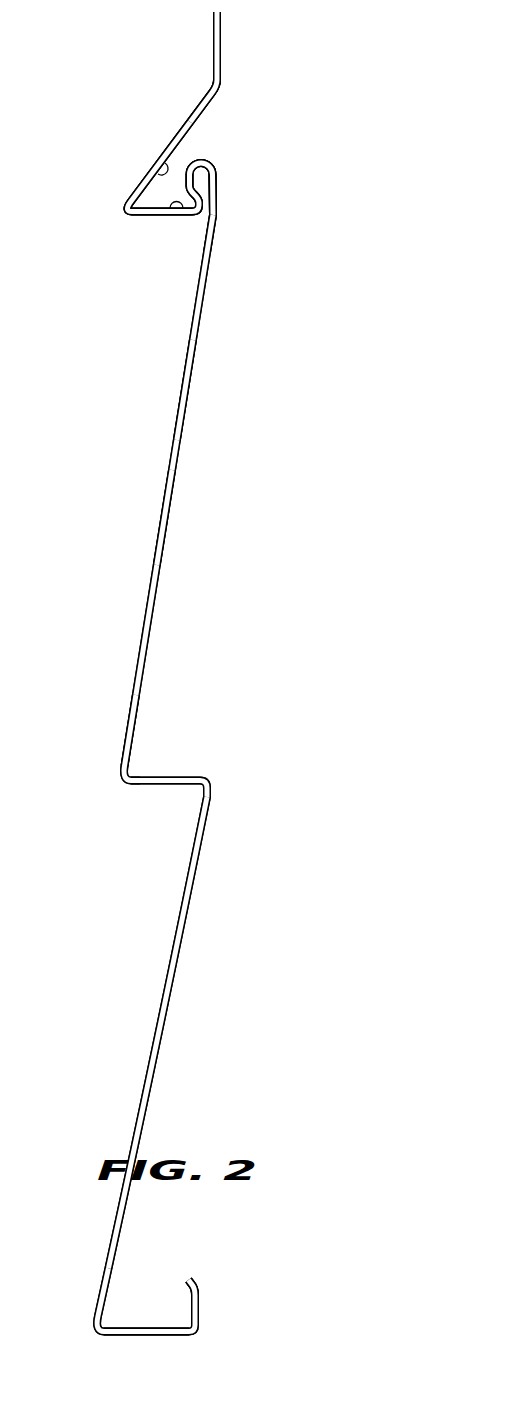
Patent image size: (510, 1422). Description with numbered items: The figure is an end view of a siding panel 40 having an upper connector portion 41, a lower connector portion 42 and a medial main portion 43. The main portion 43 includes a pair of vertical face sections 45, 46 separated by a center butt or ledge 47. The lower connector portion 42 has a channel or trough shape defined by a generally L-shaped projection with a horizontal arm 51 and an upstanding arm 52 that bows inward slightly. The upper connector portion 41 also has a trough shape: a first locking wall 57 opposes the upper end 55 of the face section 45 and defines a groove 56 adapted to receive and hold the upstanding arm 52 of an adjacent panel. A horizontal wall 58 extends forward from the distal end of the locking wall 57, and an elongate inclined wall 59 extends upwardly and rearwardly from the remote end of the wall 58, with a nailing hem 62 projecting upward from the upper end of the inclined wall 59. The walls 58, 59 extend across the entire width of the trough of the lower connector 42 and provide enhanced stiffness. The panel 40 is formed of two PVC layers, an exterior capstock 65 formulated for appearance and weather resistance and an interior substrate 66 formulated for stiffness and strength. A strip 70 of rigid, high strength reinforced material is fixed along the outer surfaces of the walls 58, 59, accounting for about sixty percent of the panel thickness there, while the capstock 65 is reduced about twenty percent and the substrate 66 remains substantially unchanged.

The siding panel 40 is at (240, 389).
The upper connector portion 41 is at (86, 139).
The lower connector portion 42 is at (223, 1313).
The main portion 43 is at (132, 693).
The face section 45 is at (168, 462).
The face section 46 is at (160, 1024).
The center butt 47 is at (176, 784).
The horizontal arm 51 is at (158, 1336).
The upstanding arm 52 is at (193, 1287).
The upper end 55 is at (218, 192).
The groove 56 is at (204, 170).
The first locking wall 57 is at (198, 180).
The horizontal wall 58 is at (175, 205).
The inclined wall 59 is at (171, 165).
The nailing hem 62 is at (220, 53).
The capstock 65 is at (158, 530).
The substrate 66 is at (173, 498).
The strip 70 is at (127, 212).